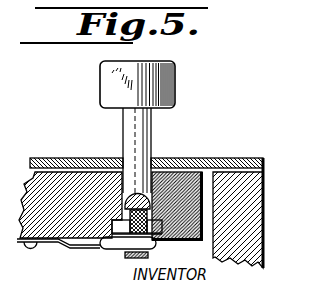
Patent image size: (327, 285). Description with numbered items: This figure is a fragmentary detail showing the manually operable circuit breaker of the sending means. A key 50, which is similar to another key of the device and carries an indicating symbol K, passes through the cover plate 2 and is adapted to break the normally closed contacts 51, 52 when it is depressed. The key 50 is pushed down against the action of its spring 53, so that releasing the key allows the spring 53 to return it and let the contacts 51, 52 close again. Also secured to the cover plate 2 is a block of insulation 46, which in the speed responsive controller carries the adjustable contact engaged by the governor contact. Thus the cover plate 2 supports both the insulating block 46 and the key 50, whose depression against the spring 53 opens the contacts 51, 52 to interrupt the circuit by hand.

The cover plate 2 is at (173, 159).
The block of insulation 46 is at (184, 241).
The key 50 is at (130, 127).
The normally closed contact 51 is at (76, 249).
The normally closed contact 52 is at (95, 252).
The spring 53 is at (122, 255).